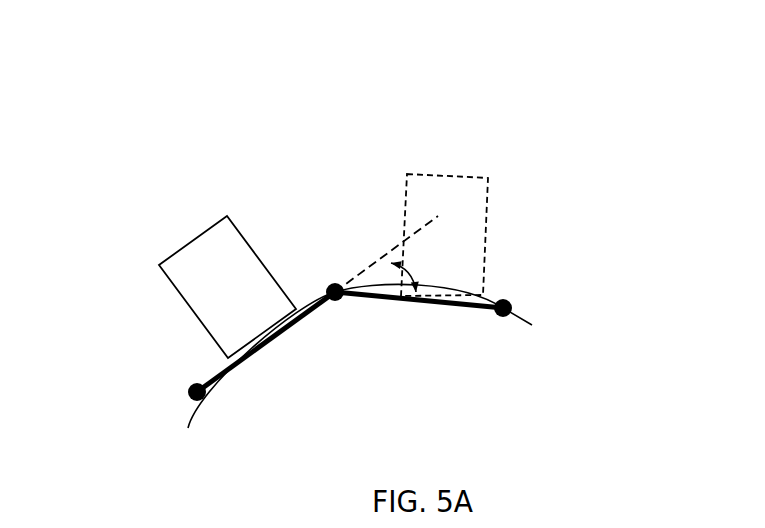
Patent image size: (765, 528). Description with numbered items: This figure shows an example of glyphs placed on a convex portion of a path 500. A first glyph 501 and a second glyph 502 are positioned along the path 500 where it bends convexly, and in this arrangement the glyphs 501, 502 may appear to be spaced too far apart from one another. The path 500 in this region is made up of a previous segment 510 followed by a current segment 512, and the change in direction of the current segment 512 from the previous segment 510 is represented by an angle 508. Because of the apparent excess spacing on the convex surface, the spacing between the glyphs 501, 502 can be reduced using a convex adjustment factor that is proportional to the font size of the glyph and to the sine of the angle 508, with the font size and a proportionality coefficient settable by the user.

The path 500 is at (190, 417).
The first glyph 501 is at (190, 247).
The second glyph 502 is at (453, 175).
The angle 508 is at (415, 269).
The previous segment 510 is at (283, 342).
The current segment 512 is at (448, 305).